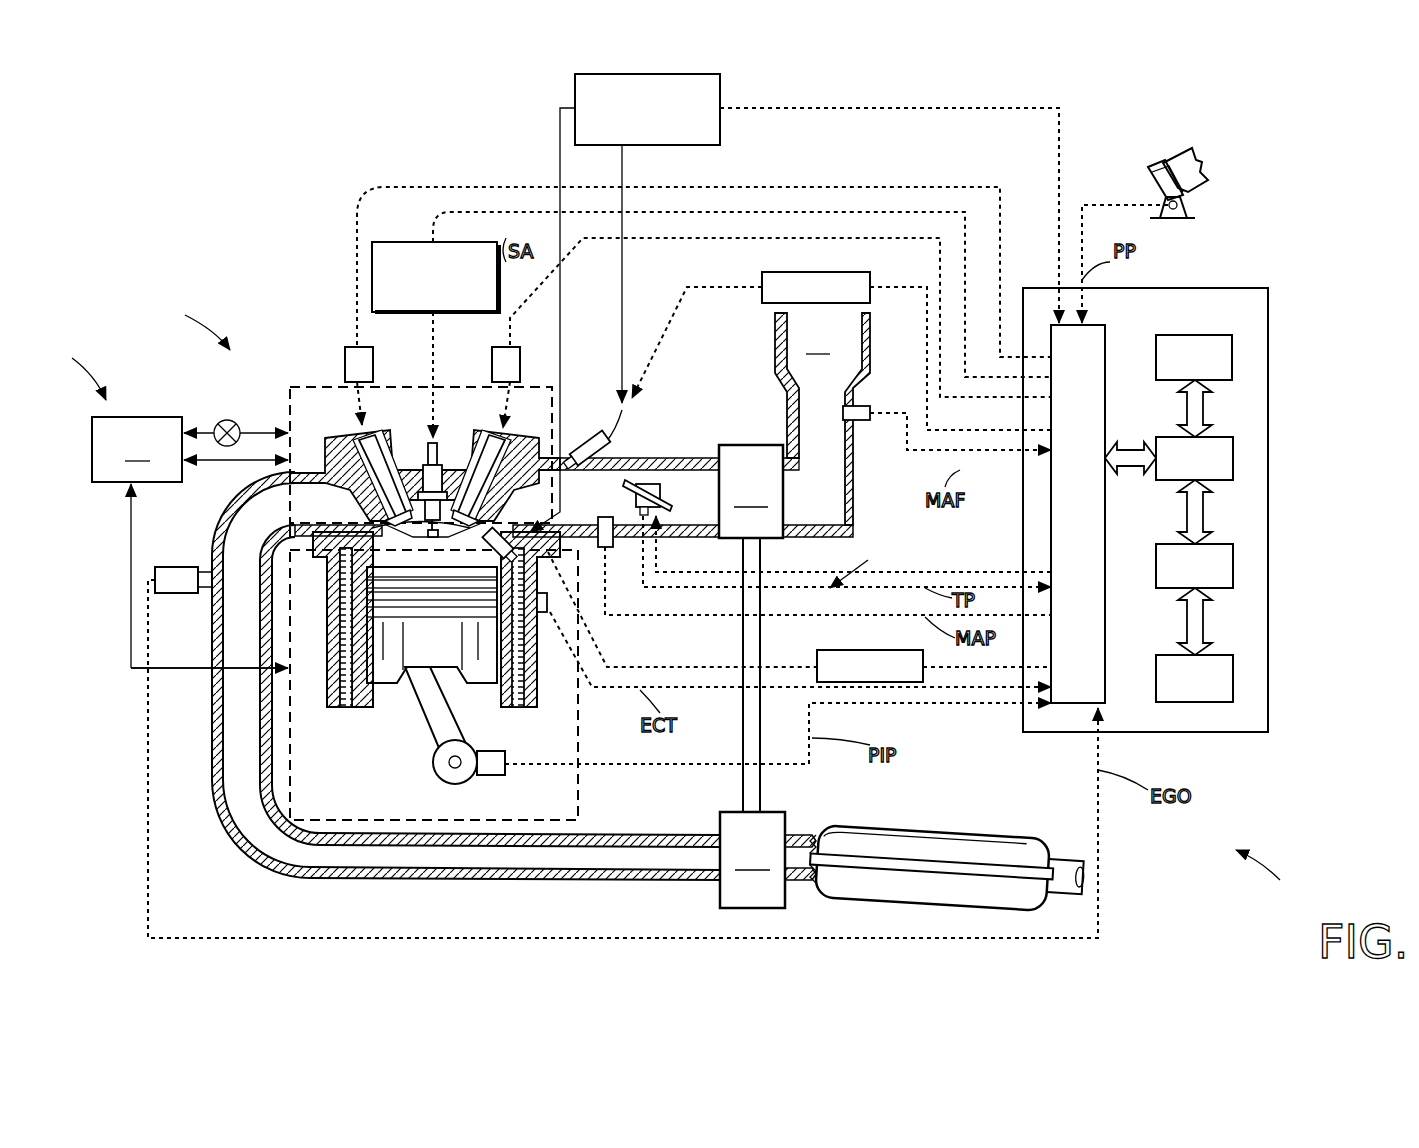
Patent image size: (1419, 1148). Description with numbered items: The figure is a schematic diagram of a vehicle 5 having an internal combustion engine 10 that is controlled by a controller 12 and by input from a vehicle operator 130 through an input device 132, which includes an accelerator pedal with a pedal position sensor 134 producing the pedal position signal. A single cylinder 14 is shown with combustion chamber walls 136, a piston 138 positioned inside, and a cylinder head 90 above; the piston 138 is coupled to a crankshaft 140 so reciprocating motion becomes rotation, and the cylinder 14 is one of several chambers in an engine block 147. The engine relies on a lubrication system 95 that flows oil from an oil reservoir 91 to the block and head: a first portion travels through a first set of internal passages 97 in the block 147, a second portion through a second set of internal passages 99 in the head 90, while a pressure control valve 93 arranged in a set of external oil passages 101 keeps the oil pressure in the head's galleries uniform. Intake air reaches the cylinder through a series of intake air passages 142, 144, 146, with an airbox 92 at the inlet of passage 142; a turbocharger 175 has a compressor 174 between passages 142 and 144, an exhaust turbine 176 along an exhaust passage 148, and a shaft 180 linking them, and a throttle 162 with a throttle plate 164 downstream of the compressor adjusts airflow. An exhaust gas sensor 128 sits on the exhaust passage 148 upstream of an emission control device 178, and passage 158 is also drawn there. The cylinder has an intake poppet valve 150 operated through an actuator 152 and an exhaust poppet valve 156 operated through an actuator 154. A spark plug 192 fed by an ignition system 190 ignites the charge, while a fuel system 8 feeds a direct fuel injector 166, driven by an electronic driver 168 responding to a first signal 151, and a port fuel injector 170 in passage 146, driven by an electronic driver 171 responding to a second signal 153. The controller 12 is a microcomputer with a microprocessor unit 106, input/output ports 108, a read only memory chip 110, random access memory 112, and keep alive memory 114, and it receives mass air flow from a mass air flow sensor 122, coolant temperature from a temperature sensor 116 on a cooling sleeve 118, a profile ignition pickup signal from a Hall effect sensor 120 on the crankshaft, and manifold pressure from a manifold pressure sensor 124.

The vehicle 5 is at (1289, 883).
The fuel system 8 is at (680, 72).
The internal combustion engine 10 is at (162, 315).
The controller 12 is at (1268, 290).
The cylinder 14 is at (345, 560).
The cylinder head 90 is at (310, 386).
The oil reservoir 91 is at (137, 449).
The airbox 92 is at (822, 419).
The pressure control valve 93 is at (220, 421).
The lubrication system 95 is at (57, 351).
The first set of internal passages 97 is at (131, 625).
The second set of internal passages 99 is at (230, 462).
The set of external oil passages 101 is at (270, 430).
The microprocessor unit 106 is at (1233, 450).
The input/output ports 108 is at (1105, 335).
The read only memory chip 110 is at (1232, 352).
The random access memory 112 is at (1233, 565).
The keep alive memory 114 is at (1233, 676).
The temperature sensor 116 is at (548, 615).
The cooling sleeve 118 is at (537, 685).
The Hall effect sensor 120 is at (490, 778).
The mass air flow sensor 122 is at (860, 422).
The manifold pressure sensor 124 is at (610, 550).
The exhaust gas sensor 128 is at (198, 570).
The vehicle operator 130 is at (1205, 170).
The input device 132 is at (1152, 175).
The pedal position sensor 134 is at (1180, 208).
The combustion chamber walls 136 is at (370, 710).
The piston 138 is at (415, 655).
The crankshaft 140 is at (443, 782).
The intake air passage 142 is at (840, 459).
The intake air passage 144 is at (715, 507).
The intake air passage 146 is at (622, 507).
The engine block 147 is at (292, 770).
The exhaust passage 148 is at (278, 532).
The intake poppet valve 150 is at (466, 465).
The first signal 151 is at (618, 666).
The actuator 152 is at (492, 358).
The second signal 153 is at (690, 288).
The actuator 154 is at (345, 355).
The exhaust poppet valve 156 is at (345, 465).
The exhaust gas recirculation passage 158 is at (545, 882).
The throttle 162 is at (655, 482).
The throttle plate 164 is at (624, 478).
The fuel injector 166 is at (497, 528).
The electronic driver 168 is at (820, 652).
The fuel injector 170 is at (595, 440).
The electronic driver 171 is at (762, 276).
The compressor 174 is at (751, 491).
The turbocharger 175 is at (861, 563).
The exhaust turbine 176 is at (768, 860).
The emission control device 178 is at (1005, 840).
The shaft 180 is at (765, 778).
The ignition system 190 is at (380, 242).
The spark plug 192 is at (425, 465).